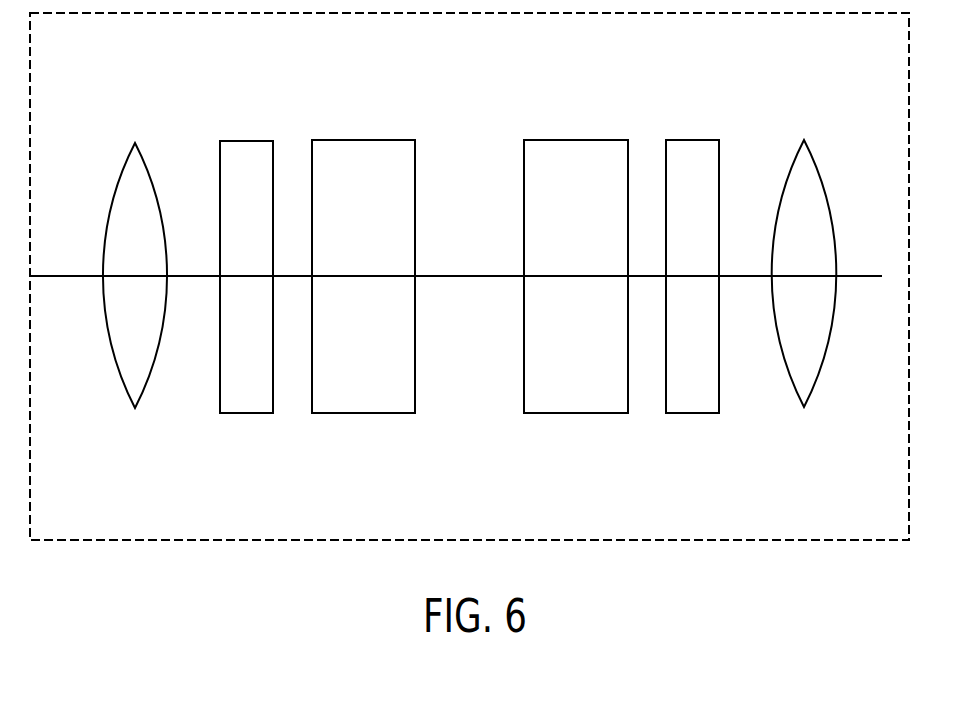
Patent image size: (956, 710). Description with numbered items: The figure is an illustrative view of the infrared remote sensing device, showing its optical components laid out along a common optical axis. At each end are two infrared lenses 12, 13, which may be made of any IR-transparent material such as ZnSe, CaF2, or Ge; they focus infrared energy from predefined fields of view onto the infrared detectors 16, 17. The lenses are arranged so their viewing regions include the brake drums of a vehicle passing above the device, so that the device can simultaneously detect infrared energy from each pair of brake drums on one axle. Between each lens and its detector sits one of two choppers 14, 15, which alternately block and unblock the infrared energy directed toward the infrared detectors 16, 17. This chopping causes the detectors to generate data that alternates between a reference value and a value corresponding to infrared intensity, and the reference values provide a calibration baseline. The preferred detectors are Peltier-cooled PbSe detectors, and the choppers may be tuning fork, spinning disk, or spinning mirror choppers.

The infrared lens 12 is at (132, 129).
The infrared lens 13 is at (801, 128).
The chopper 14 is at (262, 128).
The chopper 15 is at (674, 128).
The infrared detector 16 is at (357, 128).
The infrared detector 17 is at (578, 128).